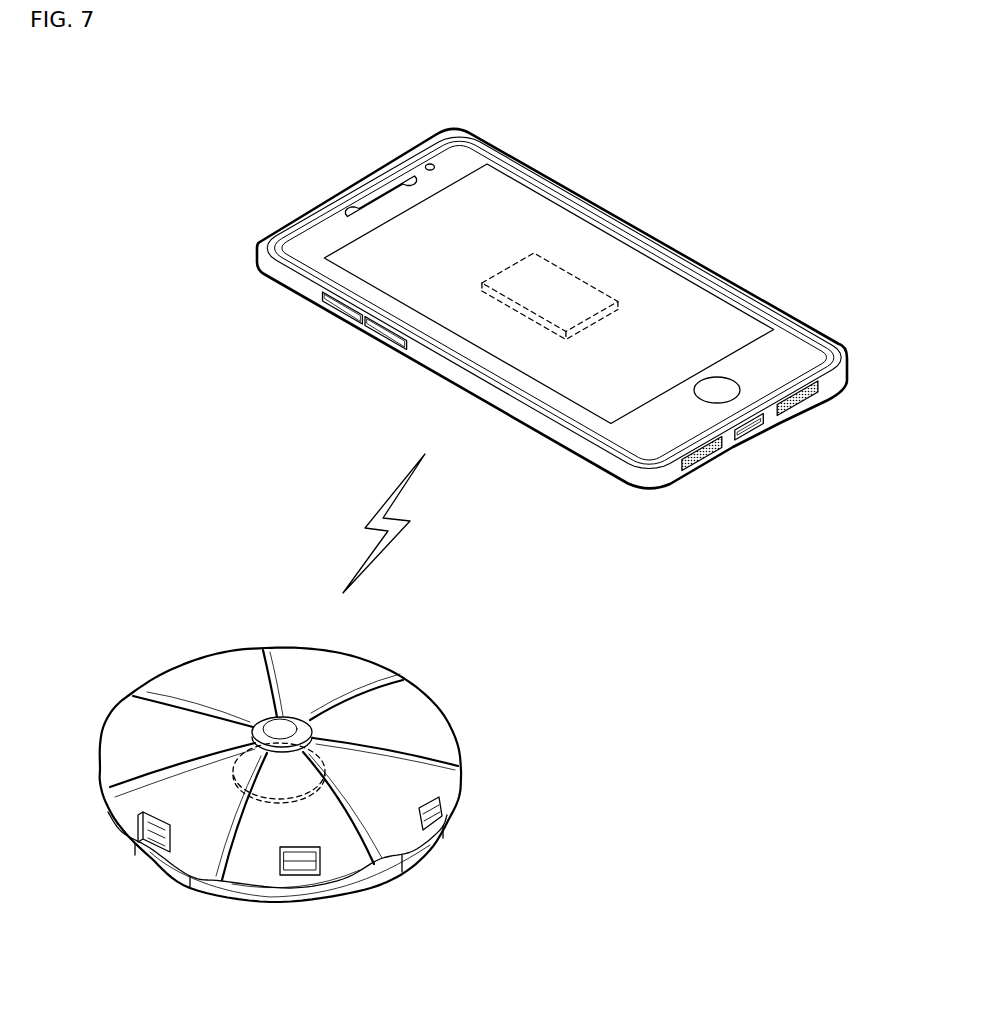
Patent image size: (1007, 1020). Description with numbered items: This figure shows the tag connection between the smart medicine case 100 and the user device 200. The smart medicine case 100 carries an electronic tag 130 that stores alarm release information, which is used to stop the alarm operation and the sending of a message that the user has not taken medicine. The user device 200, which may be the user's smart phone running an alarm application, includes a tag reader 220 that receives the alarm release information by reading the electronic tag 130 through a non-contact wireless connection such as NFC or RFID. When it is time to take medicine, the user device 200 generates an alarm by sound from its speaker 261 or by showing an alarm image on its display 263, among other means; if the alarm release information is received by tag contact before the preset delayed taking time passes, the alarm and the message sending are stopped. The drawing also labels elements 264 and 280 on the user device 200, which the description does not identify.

The user device 200 is at (338, 154).
The camera 264 is at (430, 162).
The tag reader 220 is at (552, 264).
The display 263 is at (648, 290).
The home button 280 is at (713, 380).
The speaker 261 is at (797, 400).
The smart medicine case 100 is at (163, 651).
The electronic tag 130 is at (263, 773).